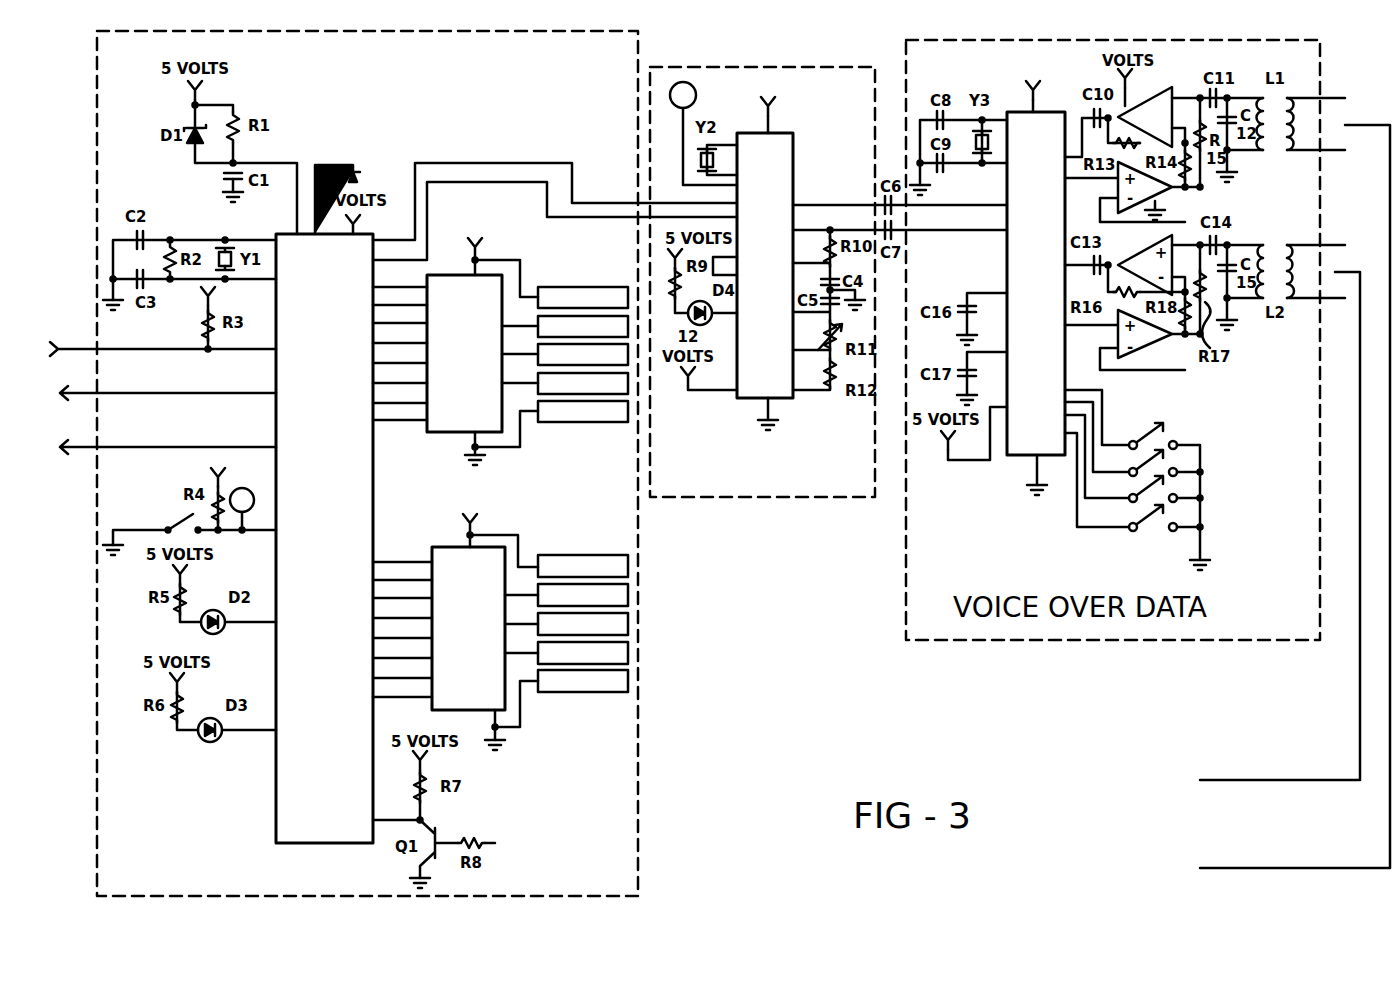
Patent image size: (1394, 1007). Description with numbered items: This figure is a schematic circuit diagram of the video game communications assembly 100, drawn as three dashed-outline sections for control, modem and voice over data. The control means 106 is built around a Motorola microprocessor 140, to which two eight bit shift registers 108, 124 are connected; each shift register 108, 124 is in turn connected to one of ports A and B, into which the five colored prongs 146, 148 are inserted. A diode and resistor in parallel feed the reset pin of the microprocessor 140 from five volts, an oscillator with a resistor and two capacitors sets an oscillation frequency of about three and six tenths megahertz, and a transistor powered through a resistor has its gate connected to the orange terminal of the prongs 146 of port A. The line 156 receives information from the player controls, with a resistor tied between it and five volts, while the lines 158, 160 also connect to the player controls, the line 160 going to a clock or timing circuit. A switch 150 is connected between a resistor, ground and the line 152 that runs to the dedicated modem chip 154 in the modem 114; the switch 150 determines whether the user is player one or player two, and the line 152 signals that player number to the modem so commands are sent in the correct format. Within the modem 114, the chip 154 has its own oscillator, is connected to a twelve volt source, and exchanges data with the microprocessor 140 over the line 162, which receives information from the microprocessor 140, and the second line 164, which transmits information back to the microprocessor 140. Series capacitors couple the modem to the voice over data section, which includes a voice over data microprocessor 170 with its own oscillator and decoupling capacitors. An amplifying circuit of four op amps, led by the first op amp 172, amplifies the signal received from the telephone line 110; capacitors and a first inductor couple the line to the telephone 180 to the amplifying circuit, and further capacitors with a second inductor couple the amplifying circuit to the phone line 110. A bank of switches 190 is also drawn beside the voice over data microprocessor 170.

The video game communications assembly 100 is at (740, 532).
The control means 106 is at (640, 55).
The eight bit shift register 108 is at (455, 342).
The telephone line 110 is at (1360, 710).
The modem 114 is at (782, 67).
The eight bit shift register 124 is at (455, 623).
The microprocessor 140 is at (380, 522).
The colored prongs 146 is at (538, 354).
The colored prongs 148 is at (628, 566).
The switch 150 is at (182, 520).
The line 152 is at (250, 520).
The microprocessor chip (dedicated modem) 154 is at (793, 163).
The line 156 is at (178, 349).
The line 158 is at (183, 393).
The line 160 is at (178, 447).
The line 162 is at (617, 203).
The second line 164 is at (570, 222).
The voice over data microprocessor 170 is at (1017, 458).
The first op amp 172 is at (1150, 96).
The telephone 180 is at (1390, 820).
The switches 190 is at (1143, 438).